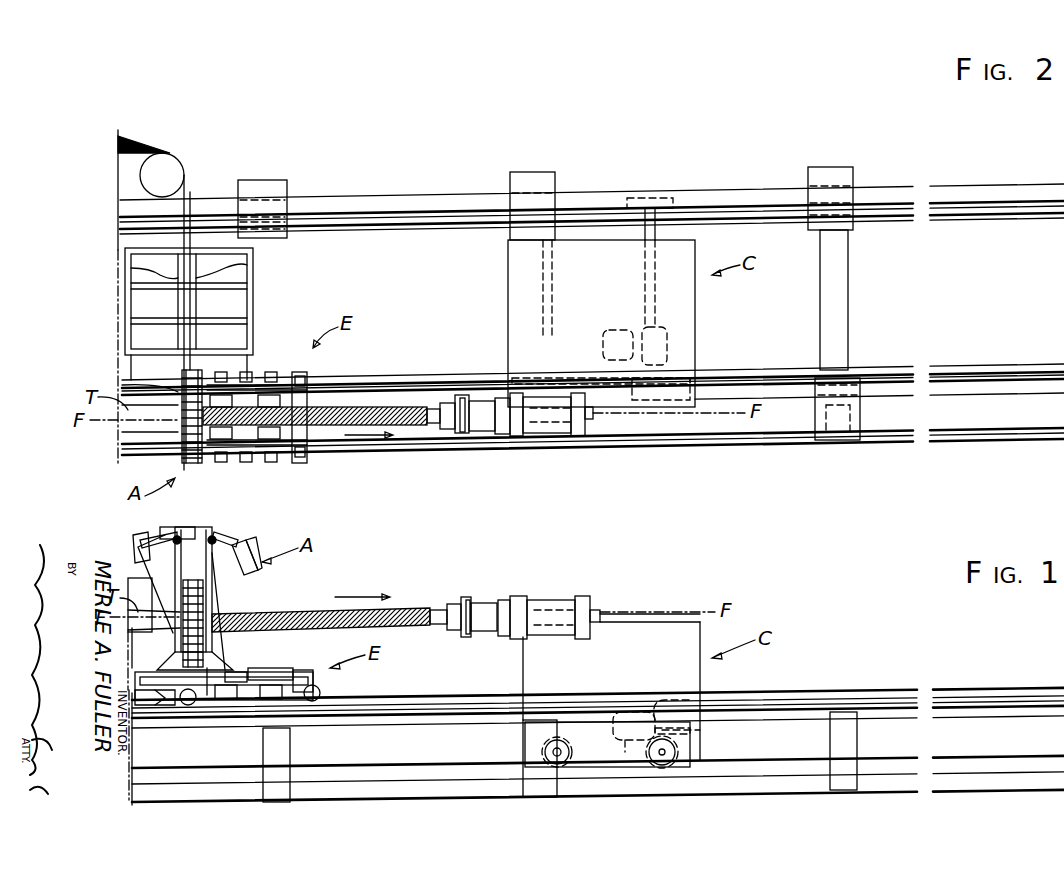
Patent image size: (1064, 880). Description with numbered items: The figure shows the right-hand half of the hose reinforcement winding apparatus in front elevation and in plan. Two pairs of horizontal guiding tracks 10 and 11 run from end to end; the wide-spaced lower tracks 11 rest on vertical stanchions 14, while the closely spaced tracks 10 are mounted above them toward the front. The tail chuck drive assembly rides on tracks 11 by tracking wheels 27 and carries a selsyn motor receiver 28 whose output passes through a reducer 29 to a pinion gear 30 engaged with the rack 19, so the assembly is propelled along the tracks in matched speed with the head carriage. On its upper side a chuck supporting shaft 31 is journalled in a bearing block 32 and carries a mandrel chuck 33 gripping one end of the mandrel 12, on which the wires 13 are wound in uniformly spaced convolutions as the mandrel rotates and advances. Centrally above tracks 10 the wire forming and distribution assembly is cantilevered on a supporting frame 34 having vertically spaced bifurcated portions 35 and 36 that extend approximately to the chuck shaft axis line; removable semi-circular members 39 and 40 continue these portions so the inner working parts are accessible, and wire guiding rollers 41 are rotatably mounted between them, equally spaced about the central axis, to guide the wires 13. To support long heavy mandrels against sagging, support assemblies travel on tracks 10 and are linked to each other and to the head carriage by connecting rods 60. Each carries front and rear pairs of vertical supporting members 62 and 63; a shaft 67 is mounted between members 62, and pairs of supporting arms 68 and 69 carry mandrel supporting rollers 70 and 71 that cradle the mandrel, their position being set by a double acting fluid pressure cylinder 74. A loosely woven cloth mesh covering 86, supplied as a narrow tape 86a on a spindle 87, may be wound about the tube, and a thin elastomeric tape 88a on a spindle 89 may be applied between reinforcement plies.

In FIG. 2b, the tracks 10 is at (970, 372).
In FIG. 1b, the tracks 10 is at (970, 690).
In FIG. 2b, the tracks 11 is at (953, 210).
In FIG. 1b, the tracks 11 is at (982, 762).
In FIG. 2b, the mandrel 12 is at (460, 432).
In FIG. 1b, the mandrel 12 is at (462, 598).
In FIG. 2b, the wires 13 is at (185, 190).
In FIG. 1b, the wires 13 is at (130, 578).
In FIG. 2b, the vertical stanchions 14 is at (850, 420).
In FIG. 1b, the vertical stanchions 14 is at (285, 762).
In FIG. 2b, the rack 19 is at (1010, 192).
In FIG. 1b, the rack 19 is at (785, 722).
In FIG. 2b, the tracking wheels 27 is at (565, 218).
In FIG. 1b, the tracking wheels 27 is at (572, 752).
In FIG. 2b, the selsyn motor receiver 28 is at (615, 330).
In FIG. 1b, the selsyn motor receiver 28 is at (625, 712).
In FIG. 2b, the reducer 29 is at (667, 345).
In FIG. 1b, the reducer 29 is at (690, 690).
In FIG. 2b, the pinion gear 30 is at (660, 198).
In FIG. 1b, the pinion gear 30 is at (680, 752).
In FIG. 2b, the chuck supporting shaft 31 is at (500, 436).
In FIG. 1b, the chuck supporting shaft 31 is at (503, 598).
In FIG. 2b, the bearing block 32 is at (552, 436).
In FIG. 1b, the bearing block 32 is at (555, 600).
In FIG. 2b, the mandrel chuck 33 is at (452, 396).
In FIG. 1b, the mandrel chuck 33 is at (465, 637).
In FIG. 2b, the supporting frame 34 is at (262, 290).
In FIG. 1b, the supporting frame 34 is at (222, 757).
In FIG. 2b, the frame portion 35 is at (247, 265).
In FIG. 2b, the frame portion 36 is at (131, 268).
In FIG. 2b, the semi-circular member 39 is at (205, 462).
In FIG. 1b, the semi-circular member 39 is at (235, 545).
In FIG. 2b, the semi-circular member 40 is at (182, 462).
In FIG. 1b, the semi-circular member 40 is at (148, 538).
In FIG. 2b, the wire guiding rollers 41 is at (140, 376).
In FIG. 1b, the wire guiding rollers 41 is at (200, 608).
In FIG. 1b, the connecting rods 60 is at (140, 705).
In FIG. 2b, the vertical supporting members 62 is at (300, 462).
In FIG. 1b, the vertical supporting members 62 is at (288, 668).
In FIG. 2b, the vertical supporting members 63 is at (285, 385).
In FIG. 2b, the shaft 67 is at (258, 440).
In FIG. 1b, the shaft 67 is at (260, 668).
In FIG. 2b, the supporting arms 68 is at (305, 392).
In FIG. 2b, the supporting arms 69 is at (307, 455).
In FIG. 2b, the mandrel supporting rollers 70 is at (305, 463).
In FIG. 2b, the mandrel supporting rollers 71 is at (262, 372).
In FIG. 2b, the double acting fluid pressure cylinder 74 is at (222, 395).
In FIG. 1b, the double acting fluid pressure cylinder 74 is at (255, 705).
In FIG. 1b, the cloth mesh covering 86 is at (165, 630).
In FIG. 1b, the narrow tape 86a is at (138, 548).
In FIG. 1b, the spindle 87 is at (177, 538).
In FIG. 1b, the narrow tape 88a is at (252, 568).
In FIG. 1b, the spindle 89 is at (222, 526).